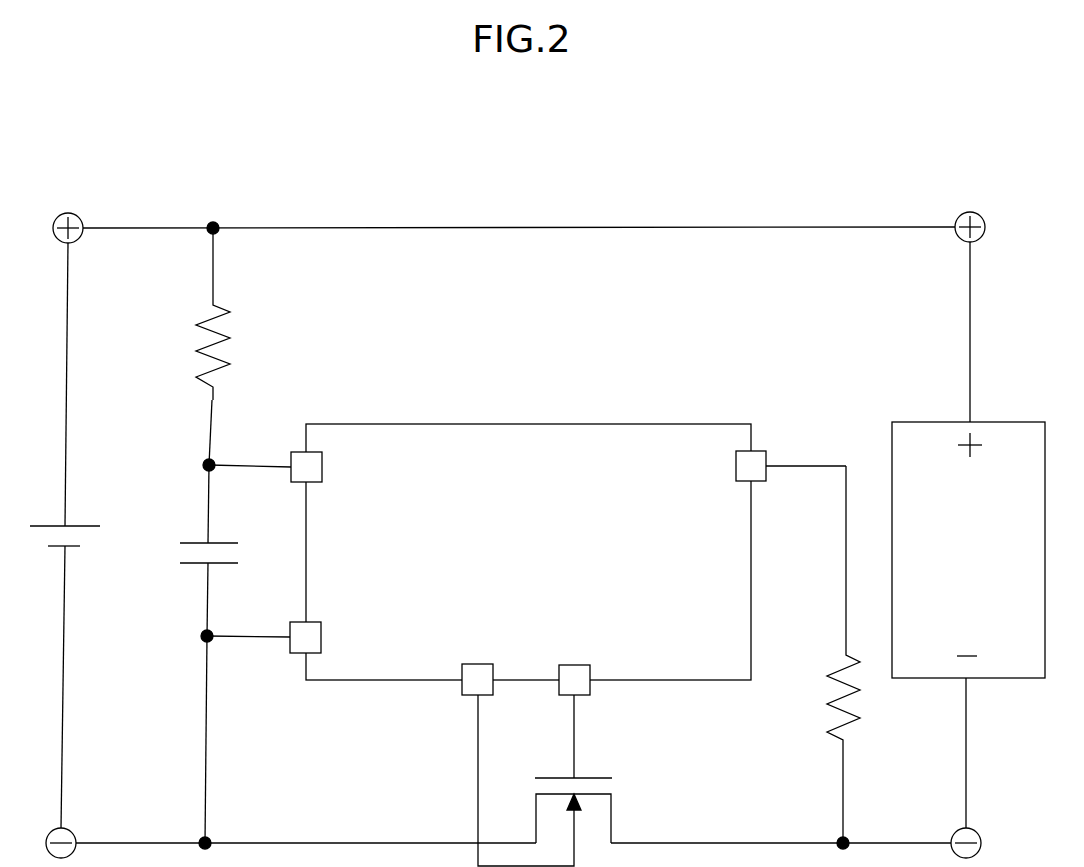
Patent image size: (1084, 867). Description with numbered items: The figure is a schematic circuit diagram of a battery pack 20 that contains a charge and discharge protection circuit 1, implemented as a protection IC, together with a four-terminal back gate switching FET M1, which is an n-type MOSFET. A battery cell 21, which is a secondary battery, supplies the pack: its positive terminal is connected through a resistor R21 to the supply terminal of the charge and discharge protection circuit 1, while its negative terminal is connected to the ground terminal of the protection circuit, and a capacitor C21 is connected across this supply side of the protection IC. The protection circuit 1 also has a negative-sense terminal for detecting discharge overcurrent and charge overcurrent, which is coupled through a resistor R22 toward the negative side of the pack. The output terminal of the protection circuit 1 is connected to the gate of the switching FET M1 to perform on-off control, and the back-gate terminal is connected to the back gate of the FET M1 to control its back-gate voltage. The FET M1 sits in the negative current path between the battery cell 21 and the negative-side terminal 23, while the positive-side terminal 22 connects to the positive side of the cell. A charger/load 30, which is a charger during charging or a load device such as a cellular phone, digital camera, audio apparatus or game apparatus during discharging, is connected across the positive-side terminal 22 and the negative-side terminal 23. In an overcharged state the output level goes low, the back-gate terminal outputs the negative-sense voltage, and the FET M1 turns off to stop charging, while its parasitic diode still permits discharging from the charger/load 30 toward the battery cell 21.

The battery pack 20 is at (72, 165).
The battery cell 21 is at (82, 526).
The positive-side terminal 22 is at (986, 227).
The negative-side terminal 23 is at (982, 843).
The charger/load 30 is at (1008, 422).
The charge and discharge protection circuit 1 is at (545, 424).
The resistor R21 is at (236, 350).
The capacitor C21 is at (185, 554).
The resistor R22 is at (869, 654).
The four-terminal back gate switching FET M1 is at (565, 780).